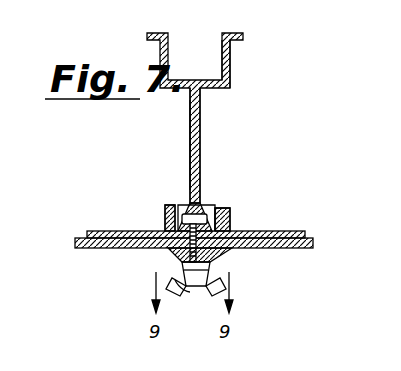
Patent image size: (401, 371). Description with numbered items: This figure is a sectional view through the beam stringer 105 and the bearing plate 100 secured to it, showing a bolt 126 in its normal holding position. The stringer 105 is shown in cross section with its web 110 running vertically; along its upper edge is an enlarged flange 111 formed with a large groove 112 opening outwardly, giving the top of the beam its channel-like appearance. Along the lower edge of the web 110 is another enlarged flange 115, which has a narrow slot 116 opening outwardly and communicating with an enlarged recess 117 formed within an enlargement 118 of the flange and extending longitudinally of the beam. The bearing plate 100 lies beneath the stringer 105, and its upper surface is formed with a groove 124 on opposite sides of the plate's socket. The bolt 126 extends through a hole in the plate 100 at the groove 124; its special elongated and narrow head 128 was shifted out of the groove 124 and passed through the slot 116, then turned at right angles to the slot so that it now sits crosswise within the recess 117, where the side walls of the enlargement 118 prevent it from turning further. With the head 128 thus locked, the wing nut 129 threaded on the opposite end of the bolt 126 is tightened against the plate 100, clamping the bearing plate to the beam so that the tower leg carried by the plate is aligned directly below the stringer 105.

The bearing plate 100 is at (290, 250).
The beam stringer 105 is at (201, 122).
The web 110 is at (190, 143).
The upper edge or flange 111 is at (231, 58).
The groove 112 is at (212, 48).
The lower flange 115 is at (248, 228).
The slot 116 is at (222, 252).
The recess 117 is at (207, 196).
The enlargement 118 is at (232, 200).
The groove 124 is at (172, 250).
The bolt 126 is at (190, 295).
The bolt head 128 is at (183, 194).
The wing nut 129 is at (172, 281).